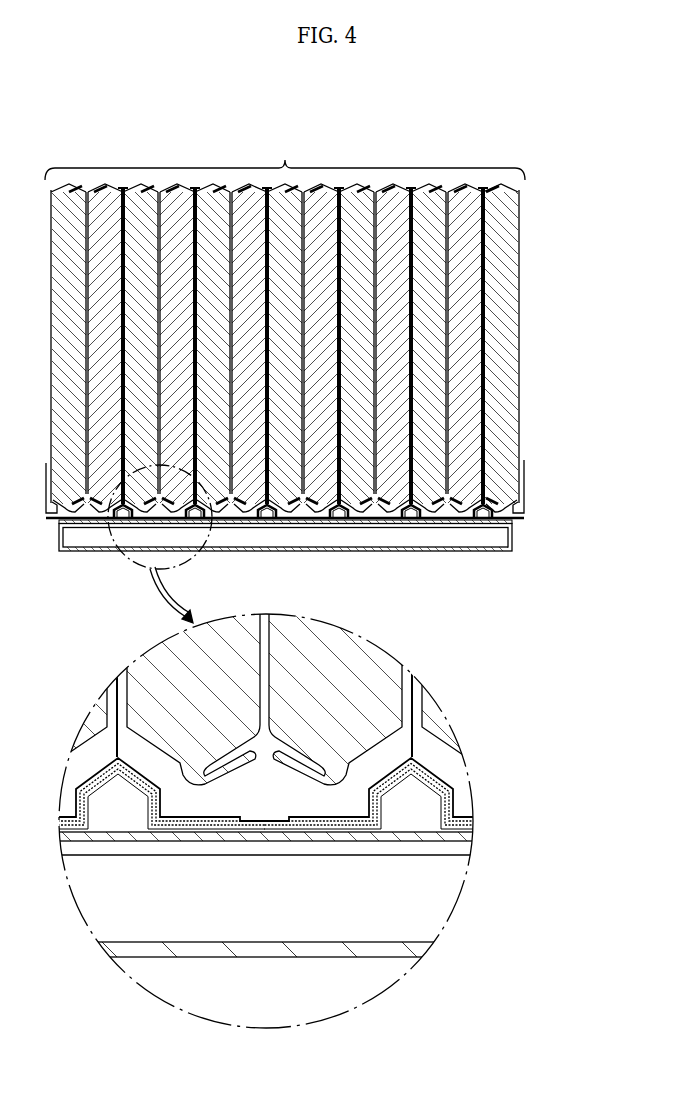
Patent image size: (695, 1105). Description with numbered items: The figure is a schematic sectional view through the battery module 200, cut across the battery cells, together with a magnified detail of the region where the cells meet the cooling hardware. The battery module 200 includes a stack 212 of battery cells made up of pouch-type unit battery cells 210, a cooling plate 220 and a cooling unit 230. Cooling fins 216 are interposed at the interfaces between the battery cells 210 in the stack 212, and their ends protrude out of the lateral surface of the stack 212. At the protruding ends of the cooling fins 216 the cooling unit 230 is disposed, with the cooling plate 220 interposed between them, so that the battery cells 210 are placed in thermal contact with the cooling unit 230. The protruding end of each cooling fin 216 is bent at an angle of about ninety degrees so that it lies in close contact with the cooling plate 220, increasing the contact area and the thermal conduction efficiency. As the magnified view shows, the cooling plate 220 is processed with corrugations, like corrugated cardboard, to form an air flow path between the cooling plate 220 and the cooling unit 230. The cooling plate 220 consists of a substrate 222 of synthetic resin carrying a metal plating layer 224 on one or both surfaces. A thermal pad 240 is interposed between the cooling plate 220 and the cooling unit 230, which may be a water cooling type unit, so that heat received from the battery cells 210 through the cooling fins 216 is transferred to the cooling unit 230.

The battery module 200 is at (324, 554).
The battery cell 210 is at (517, 266).
The stack of battery cells 212 is at (285, 155).
The cooling fin 216 is at (413, 690).
The cooling plate 220 is at (523, 500).
The substrate 222 is at (435, 778).
The metal plating layer 224 is at (432, 767).
The cooling unit 230 is at (466, 553).
The thermal pad 240 is at (513, 522).